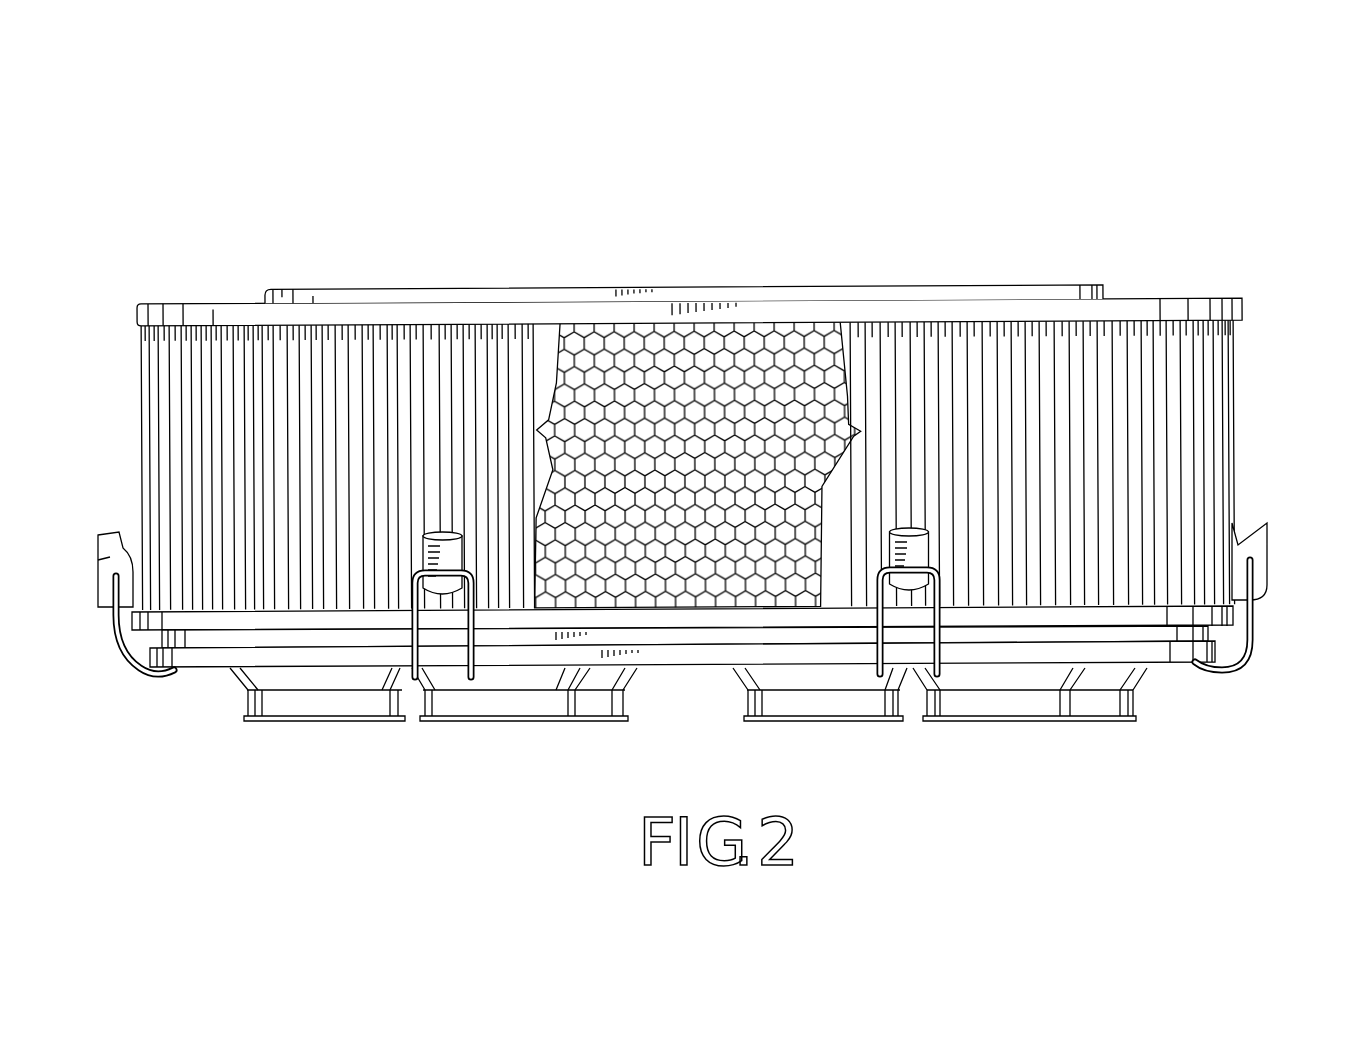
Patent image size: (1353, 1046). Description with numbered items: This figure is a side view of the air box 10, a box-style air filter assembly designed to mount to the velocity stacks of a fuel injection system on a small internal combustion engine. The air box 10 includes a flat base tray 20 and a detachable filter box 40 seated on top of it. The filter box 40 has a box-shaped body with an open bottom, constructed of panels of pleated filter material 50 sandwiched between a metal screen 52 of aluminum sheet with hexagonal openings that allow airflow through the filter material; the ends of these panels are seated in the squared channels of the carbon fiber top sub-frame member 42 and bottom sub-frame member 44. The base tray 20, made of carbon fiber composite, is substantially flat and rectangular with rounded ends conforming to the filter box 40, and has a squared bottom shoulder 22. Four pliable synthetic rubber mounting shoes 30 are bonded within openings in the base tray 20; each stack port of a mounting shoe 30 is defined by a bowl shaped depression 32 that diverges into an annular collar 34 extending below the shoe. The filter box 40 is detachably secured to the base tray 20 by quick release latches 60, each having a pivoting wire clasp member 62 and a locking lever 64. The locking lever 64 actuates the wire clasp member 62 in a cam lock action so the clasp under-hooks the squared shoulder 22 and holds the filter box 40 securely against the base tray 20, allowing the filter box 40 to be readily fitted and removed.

The air box 10 is at (714, 477).
The base tray 20 is at (734, 699).
The squared bottom shoulder 22 is at (1178, 680).
The mounting shoe 30 is at (681, 773).
The bowl shaped depression 32 is at (275, 680).
The annular collar 34 is at (357, 700).
The filter box 40 is at (448, 277).
The top sub-frame member 42 is at (1038, 286).
The bottom sub-frame member 44 is at (1218, 613).
The pleated filter material 50 is at (877, 380).
The metal screen 52 is at (762, 375).
The quick release latch 60 is at (713, 494).
The wire clasp member 62 is at (136, 672).
The locking lever 64 is at (437, 543).